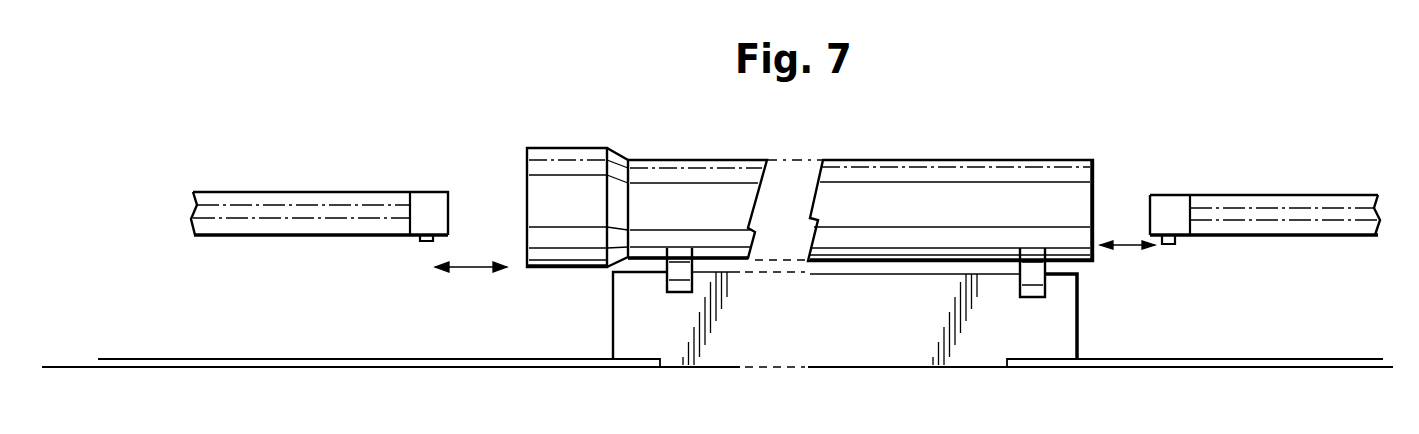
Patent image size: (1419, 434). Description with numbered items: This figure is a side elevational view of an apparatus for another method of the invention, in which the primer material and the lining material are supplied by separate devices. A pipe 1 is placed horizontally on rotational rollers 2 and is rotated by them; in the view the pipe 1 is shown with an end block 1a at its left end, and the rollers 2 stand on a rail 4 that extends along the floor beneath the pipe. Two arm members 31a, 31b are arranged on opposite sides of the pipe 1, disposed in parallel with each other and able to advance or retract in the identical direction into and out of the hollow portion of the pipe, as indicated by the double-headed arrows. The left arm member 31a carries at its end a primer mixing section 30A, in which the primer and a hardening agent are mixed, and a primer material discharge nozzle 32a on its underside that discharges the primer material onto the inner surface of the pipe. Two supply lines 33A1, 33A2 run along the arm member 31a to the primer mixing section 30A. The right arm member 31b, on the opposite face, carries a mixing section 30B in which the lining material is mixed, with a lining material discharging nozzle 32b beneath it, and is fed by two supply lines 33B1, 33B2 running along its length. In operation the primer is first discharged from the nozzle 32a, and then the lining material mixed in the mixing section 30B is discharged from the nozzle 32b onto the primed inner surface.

The pipe 1 is at (910, 176).
The end block of the body 1a is at (560, 170).
The rotational rollers 2 is at (1047, 276).
The rail 4 is at (1245, 358).
The primer mixing section 30A is at (427, 200).
The arm member 31a is at (272, 238).
The primer material discharge nozzle 32a is at (420, 242).
The left guide groove 1 33A1 is at (298, 203).
The left guide groove 2 33A2 is at (224, 217).
The mixing section 30B is at (1160, 200).
The arm member 31b is at (1262, 238).
The lining material discharging nozzle 32b is at (1167, 246).
The right guide groove 1 33B1 is at (1290, 208).
The right guide groove 2 33B2 is at (1350, 206).